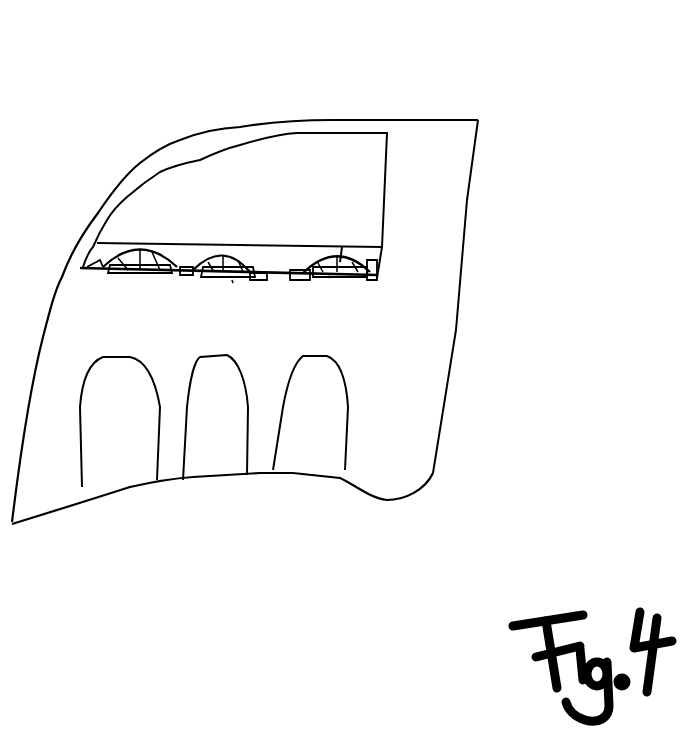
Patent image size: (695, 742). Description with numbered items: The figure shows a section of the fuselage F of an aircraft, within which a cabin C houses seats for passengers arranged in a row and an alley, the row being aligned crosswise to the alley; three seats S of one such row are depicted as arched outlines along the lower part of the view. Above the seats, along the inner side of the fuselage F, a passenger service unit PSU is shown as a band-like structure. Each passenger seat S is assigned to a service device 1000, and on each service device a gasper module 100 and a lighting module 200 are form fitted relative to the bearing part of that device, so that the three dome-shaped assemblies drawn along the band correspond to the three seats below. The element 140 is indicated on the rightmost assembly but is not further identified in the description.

The gasper module 100 is at (143, 250).
The lighting module 200 is at (170, 267).
The connecting line 140 is at (342, 247).
The service device 1000 is at (330, 278).
The passenger service unit PSU is at (377, 262).
The seat S is at (337, 417).
The cabin C is at (443, 180).
The fuselage F is at (315, 120).